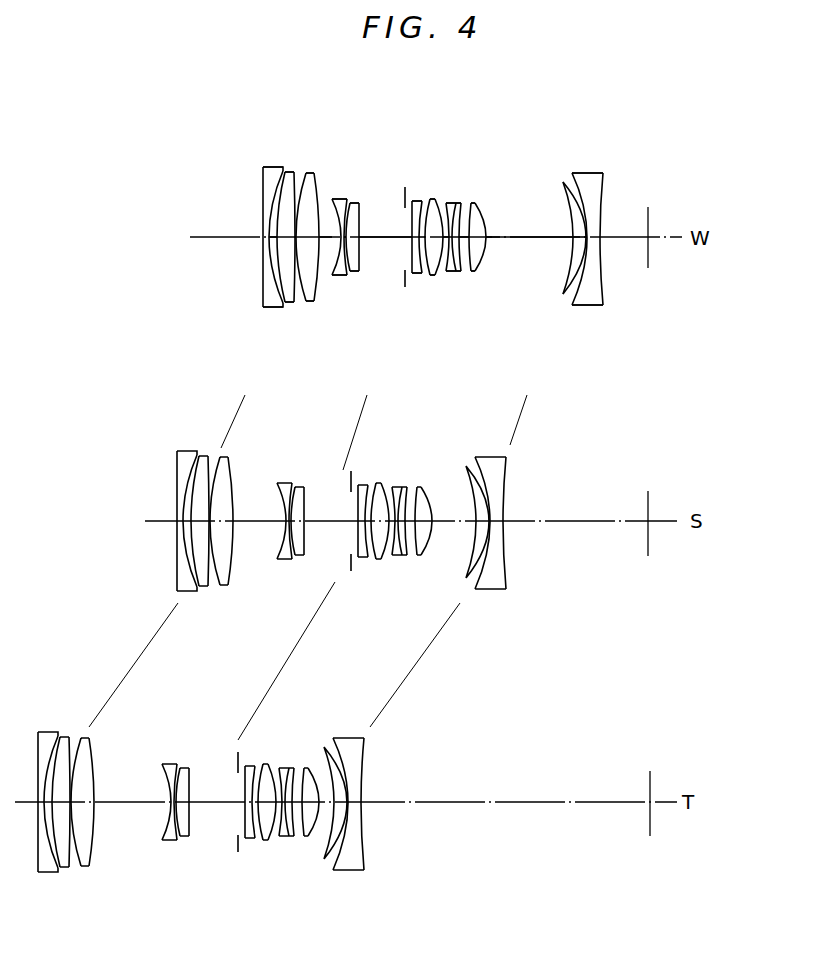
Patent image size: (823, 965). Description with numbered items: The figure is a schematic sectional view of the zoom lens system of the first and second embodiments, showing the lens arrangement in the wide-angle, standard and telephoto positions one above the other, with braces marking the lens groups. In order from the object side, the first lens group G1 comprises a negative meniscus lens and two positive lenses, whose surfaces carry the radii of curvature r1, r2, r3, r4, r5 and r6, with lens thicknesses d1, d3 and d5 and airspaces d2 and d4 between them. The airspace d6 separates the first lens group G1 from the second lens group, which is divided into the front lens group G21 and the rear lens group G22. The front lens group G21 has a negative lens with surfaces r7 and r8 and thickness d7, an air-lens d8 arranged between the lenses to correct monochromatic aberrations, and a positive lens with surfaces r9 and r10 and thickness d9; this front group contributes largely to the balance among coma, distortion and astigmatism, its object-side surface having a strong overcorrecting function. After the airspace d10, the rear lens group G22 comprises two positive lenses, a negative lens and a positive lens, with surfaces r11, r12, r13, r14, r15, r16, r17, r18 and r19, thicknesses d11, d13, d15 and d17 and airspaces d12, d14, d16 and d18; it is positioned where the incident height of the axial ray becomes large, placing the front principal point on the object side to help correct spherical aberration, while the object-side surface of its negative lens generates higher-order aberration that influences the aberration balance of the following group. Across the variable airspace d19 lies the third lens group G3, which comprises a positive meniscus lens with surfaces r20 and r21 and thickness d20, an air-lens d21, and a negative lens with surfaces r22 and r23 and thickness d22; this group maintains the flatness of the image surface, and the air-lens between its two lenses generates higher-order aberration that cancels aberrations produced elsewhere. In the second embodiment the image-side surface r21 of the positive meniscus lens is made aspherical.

The radius of curvature of lens surface r1 is at (263, 180).
The radius of curvature of lens surface r2 is at (273, 183).
The radius of curvature of lens surface r3 is at (284, 174).
The radius of curvature of lens surface r4 is at (292, 172).
The radius of curvature of lens surface r5 is at (303, 176).
The radius of curvature of lens surface r6 is at (318, 178).
The radius of curvature of lens surface r7 is at (332, 198).
The radius of curvature of lens surface r8 is at (339, 199).
The radius of curvature of lens surface r9 is at (352, 203).
The radius of curvature of lens surface r10 is at (359, 203).
The radius of curvature of lens surface r11 is at (410, 200).
The radius of curvature of lens surface r12 is at (416, 201).
The radius of curvature of lens surface r13 is at (426, 200).
The radius of curvature of lens surface r14 is at (435, 199).
The radius of curvature of lens surface r15 is at (446, 204).
The radius of curvature of lens surface r16 is at (457, 204).
The radius of curvature of lens surface r17 is at (469, 205).
The radius of curvature of lens surface r18 is at (480, 205).
The radius of curvature of lens surface r19 is at (487, 209).
The radius of curvature of lens surface r20 is at (562, 186).
The radius of curvature of lens surface r21 is at (565, 183).
The radius of curvature of lens surface r22 is at (580, 173).
The radius of curvature of lens surface r23 is at (606, 173).
The lens thickness d1 is at (265, 243).
The airspace d2 is at (268, 232).
The lens thickness d3 is at (281, 242).
The airspace d4 is at (291, 235).
The lens thickness d5 is at (303, 300).
The airspace d6 is at (320, 286).
The lens thickness d7 is at (335, 277).
The airspace d8 is at (344, 236).
The lens thickness d9 is at (355, 273).
The airspace d10 is at (372, 242).
The lens thickness d11 is at (407, 238).
The airspace d12 is at (412, 276).
The lens thickness d13 is at (419, 278).
The airspace d14 is at (432, 277).
The lens thickness d15 is at (449, 237).
The airspace d16 is at (448, 275).
The lens thickness d17 is at (463, 274).
The airspace d18 is at (479, 273).
The airspace d19 is at (505, 240).
The lens thickness d20 is at (574, 230).
The airspace d21 is at (586, 238).
The lens thickness d22 is at (602, 250).
The first lens group G1 is at (322, 377).
The front lens group G21 is at (370, 345).
The rear lens group G22 is at (495, 345).
The third lens group G3 is at (618, 377).